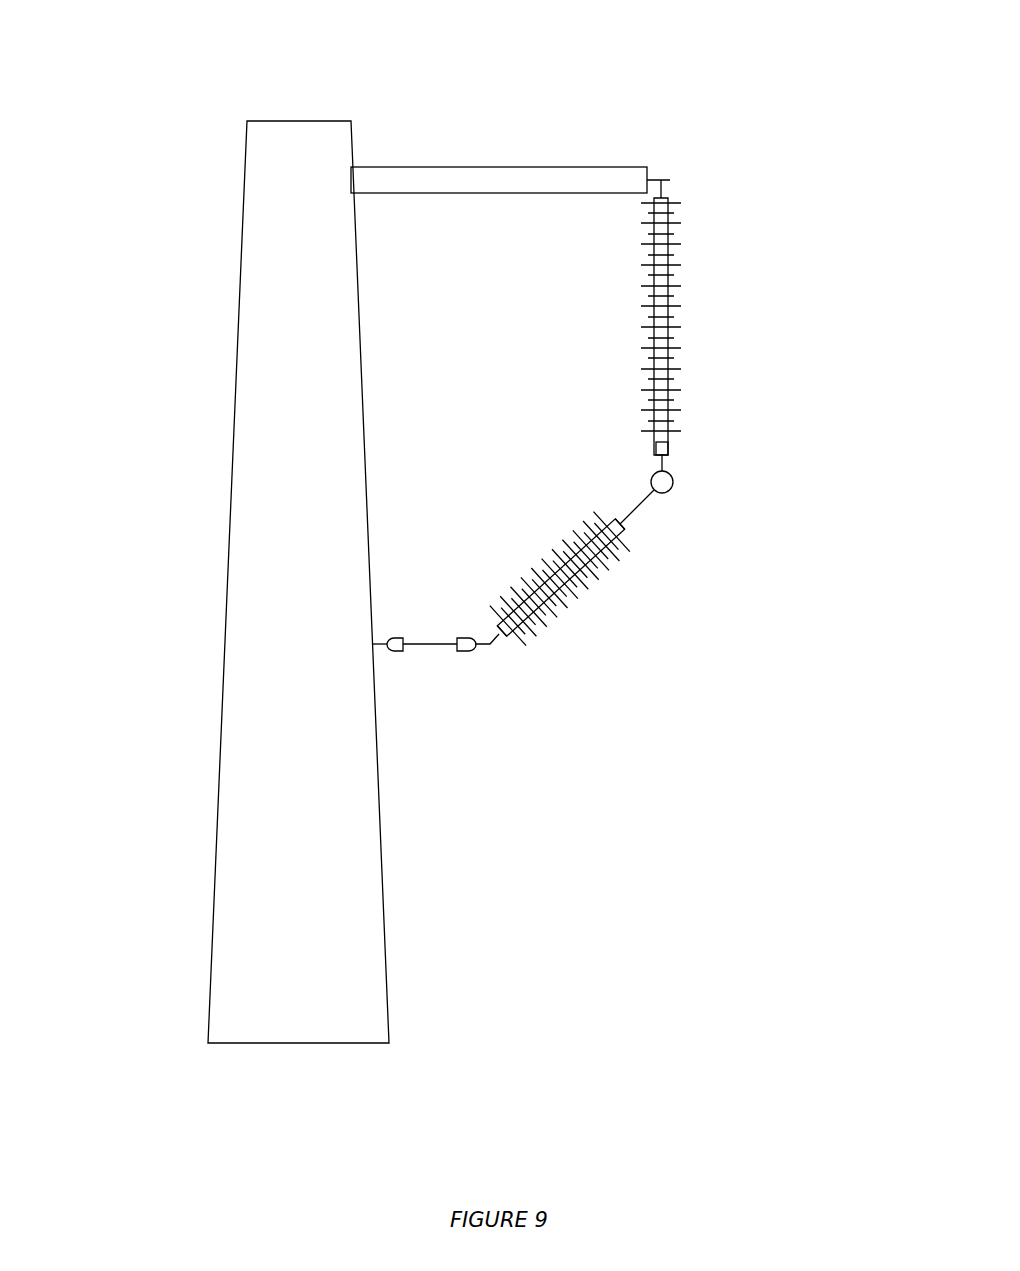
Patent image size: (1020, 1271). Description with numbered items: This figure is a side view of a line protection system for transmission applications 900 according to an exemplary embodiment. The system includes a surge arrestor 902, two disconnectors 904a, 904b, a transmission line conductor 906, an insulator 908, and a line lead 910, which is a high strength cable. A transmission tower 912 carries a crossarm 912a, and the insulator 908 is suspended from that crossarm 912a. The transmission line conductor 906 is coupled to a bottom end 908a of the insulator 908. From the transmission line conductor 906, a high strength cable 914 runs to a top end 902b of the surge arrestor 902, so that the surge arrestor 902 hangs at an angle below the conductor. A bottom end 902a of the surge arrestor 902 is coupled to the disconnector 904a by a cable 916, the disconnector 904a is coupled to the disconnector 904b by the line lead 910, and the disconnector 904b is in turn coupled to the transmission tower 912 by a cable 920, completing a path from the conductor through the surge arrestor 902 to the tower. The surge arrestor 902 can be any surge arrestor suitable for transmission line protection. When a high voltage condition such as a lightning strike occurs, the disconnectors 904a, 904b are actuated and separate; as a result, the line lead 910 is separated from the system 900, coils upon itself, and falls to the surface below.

The line protection system for transmission applications 900 is at (137, 68).
The surge arrestor 902 is at (610, 585).
The bottom end of the surge arrestor 902a is at (507, 633).
The top end of the surge arrestor 902b is at (620, 525).
The disconnector 904a is at (470, 653).
The disconnector 904b is at (395, 653).
The transmission line conductor 906 is at (675, 483).
The insulator 908 is at (643, 275).
The bottom end of the insulator 908a is at (668, 452).
The line lead 910 is at (435, 646).
The transmission tower 912 is at (240, 515).
The crossarm 912a is at (492, 172).
The high strength cable 914 is at (630, 502).
The cable 916 is at (492, 638).
The cable 920 is at (377, 640).